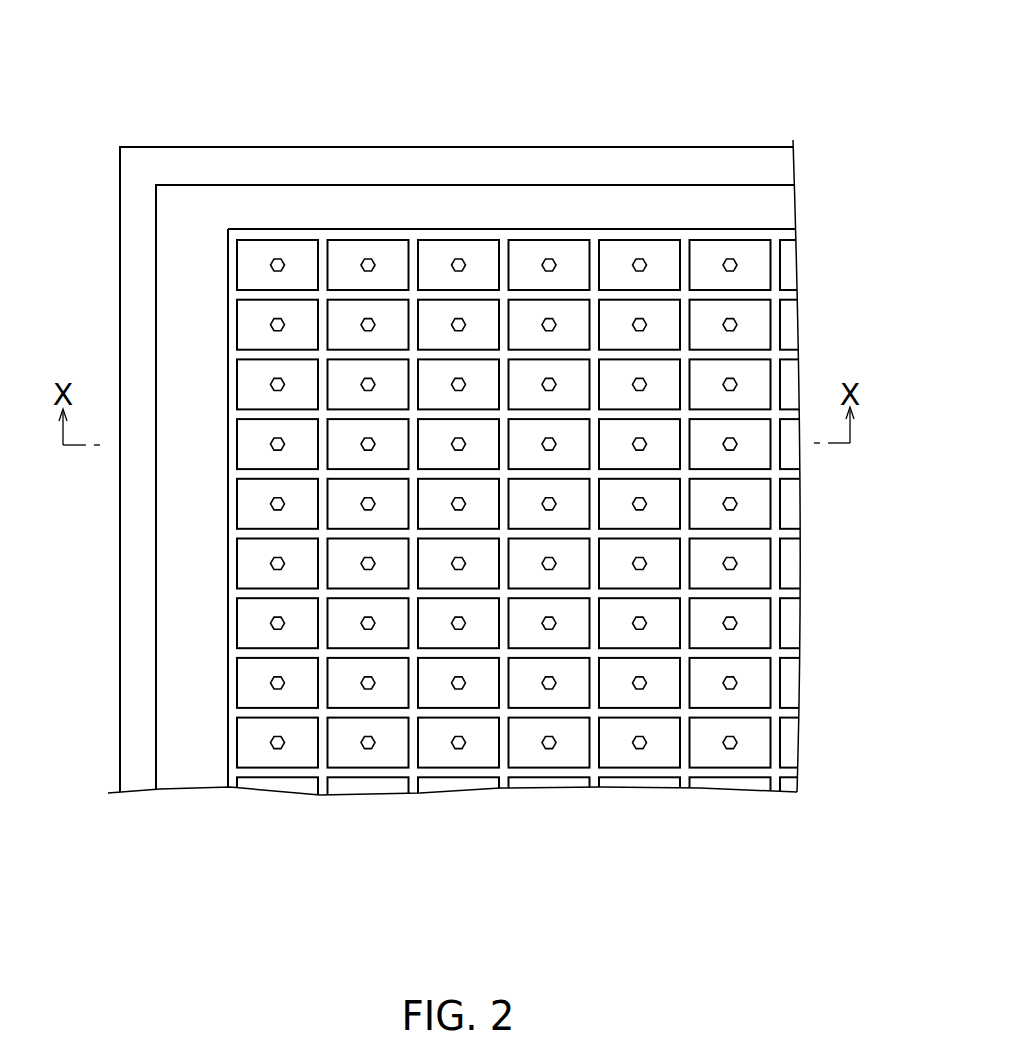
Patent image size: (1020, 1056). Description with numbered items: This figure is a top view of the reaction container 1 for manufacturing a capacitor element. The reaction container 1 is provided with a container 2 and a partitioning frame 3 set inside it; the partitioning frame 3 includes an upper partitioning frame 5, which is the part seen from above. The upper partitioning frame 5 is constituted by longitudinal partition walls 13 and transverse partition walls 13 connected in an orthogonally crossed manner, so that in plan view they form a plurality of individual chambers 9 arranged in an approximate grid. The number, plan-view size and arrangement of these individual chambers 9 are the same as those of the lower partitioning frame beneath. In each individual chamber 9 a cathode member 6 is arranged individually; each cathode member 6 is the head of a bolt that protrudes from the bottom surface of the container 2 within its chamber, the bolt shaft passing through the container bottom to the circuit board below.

The reaction container for manufacturing a capacitor element 1 is at (707, 87).
The container 2 is at (307, 165).
The partitioning frame 3 is at (430, 97).
The upper partitioning frame 5 is at (443, 235).
The cathode member 6 is at (459, 262).
The individual chamber 9 is at (568, 377).
The partition wall 13 is at (743, 290).